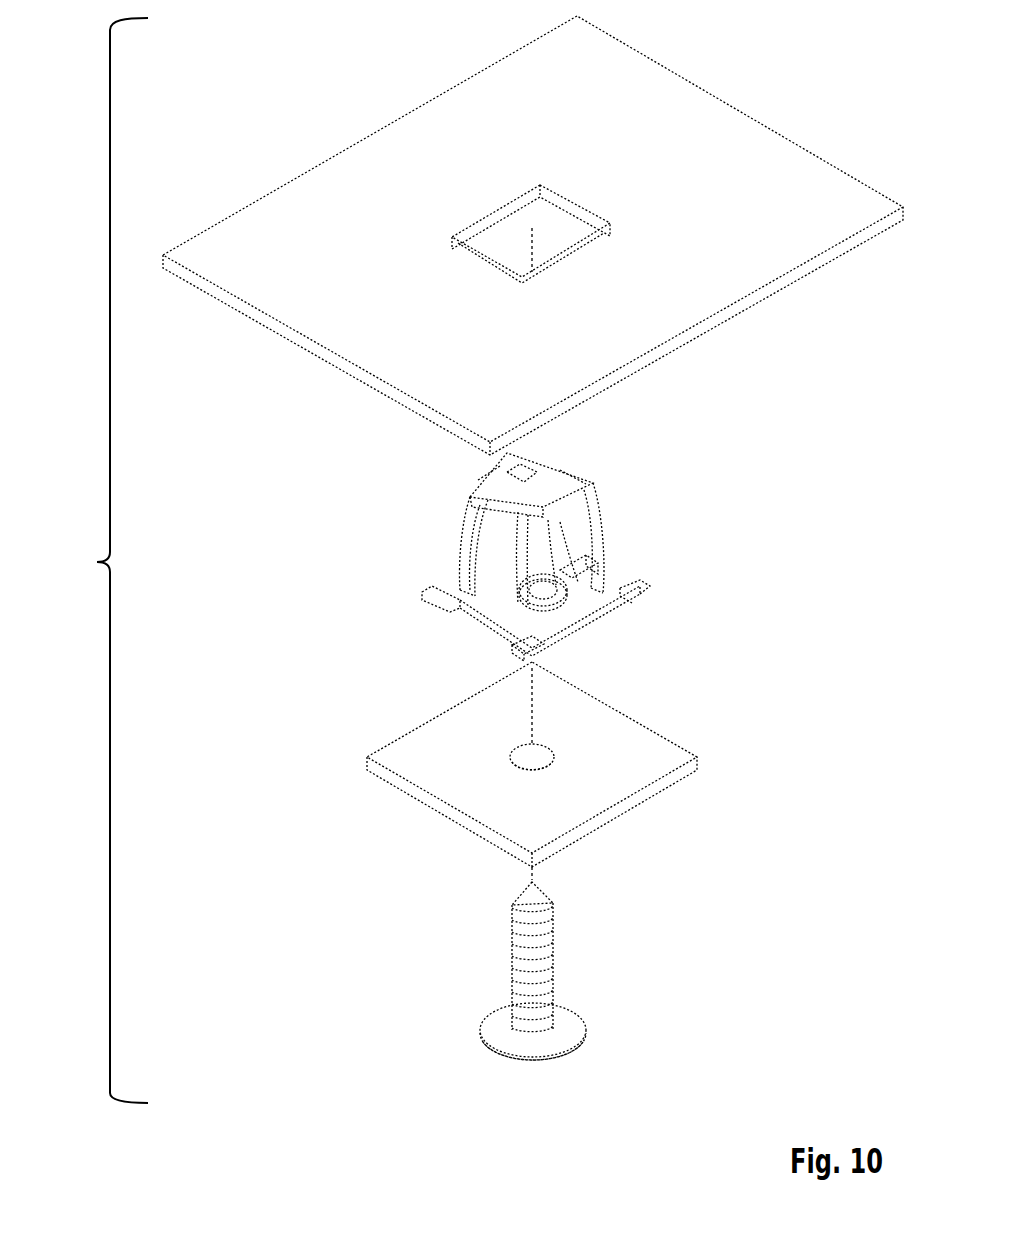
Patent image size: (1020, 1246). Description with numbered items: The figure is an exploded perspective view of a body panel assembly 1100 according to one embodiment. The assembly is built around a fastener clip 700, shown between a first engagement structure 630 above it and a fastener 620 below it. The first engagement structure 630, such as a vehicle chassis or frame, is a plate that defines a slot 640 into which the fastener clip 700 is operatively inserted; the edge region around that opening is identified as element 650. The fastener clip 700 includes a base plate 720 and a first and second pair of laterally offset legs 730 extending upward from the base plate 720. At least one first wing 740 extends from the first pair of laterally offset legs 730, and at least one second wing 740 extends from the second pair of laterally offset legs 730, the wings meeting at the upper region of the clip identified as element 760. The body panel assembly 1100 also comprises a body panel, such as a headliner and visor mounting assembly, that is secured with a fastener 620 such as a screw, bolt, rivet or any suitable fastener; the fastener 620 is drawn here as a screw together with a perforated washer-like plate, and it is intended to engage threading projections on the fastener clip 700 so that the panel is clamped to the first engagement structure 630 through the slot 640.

The body panel assembly 1100 is at (97, 562).
The first engagement structure 630 is at (685, 125).
The slot 640 is at (570, 235).
The aperture edge 650 is at (553, 263).
The fastener clip 700 is at (488, 552).
The clip head 760 is at (543, 498).
The wing 740 is at (577, 523).
The laterally offset legs 730 is at (593, 573).
The base plate 720 is at (598, 637).
The fastener 620 is at (452, 817).